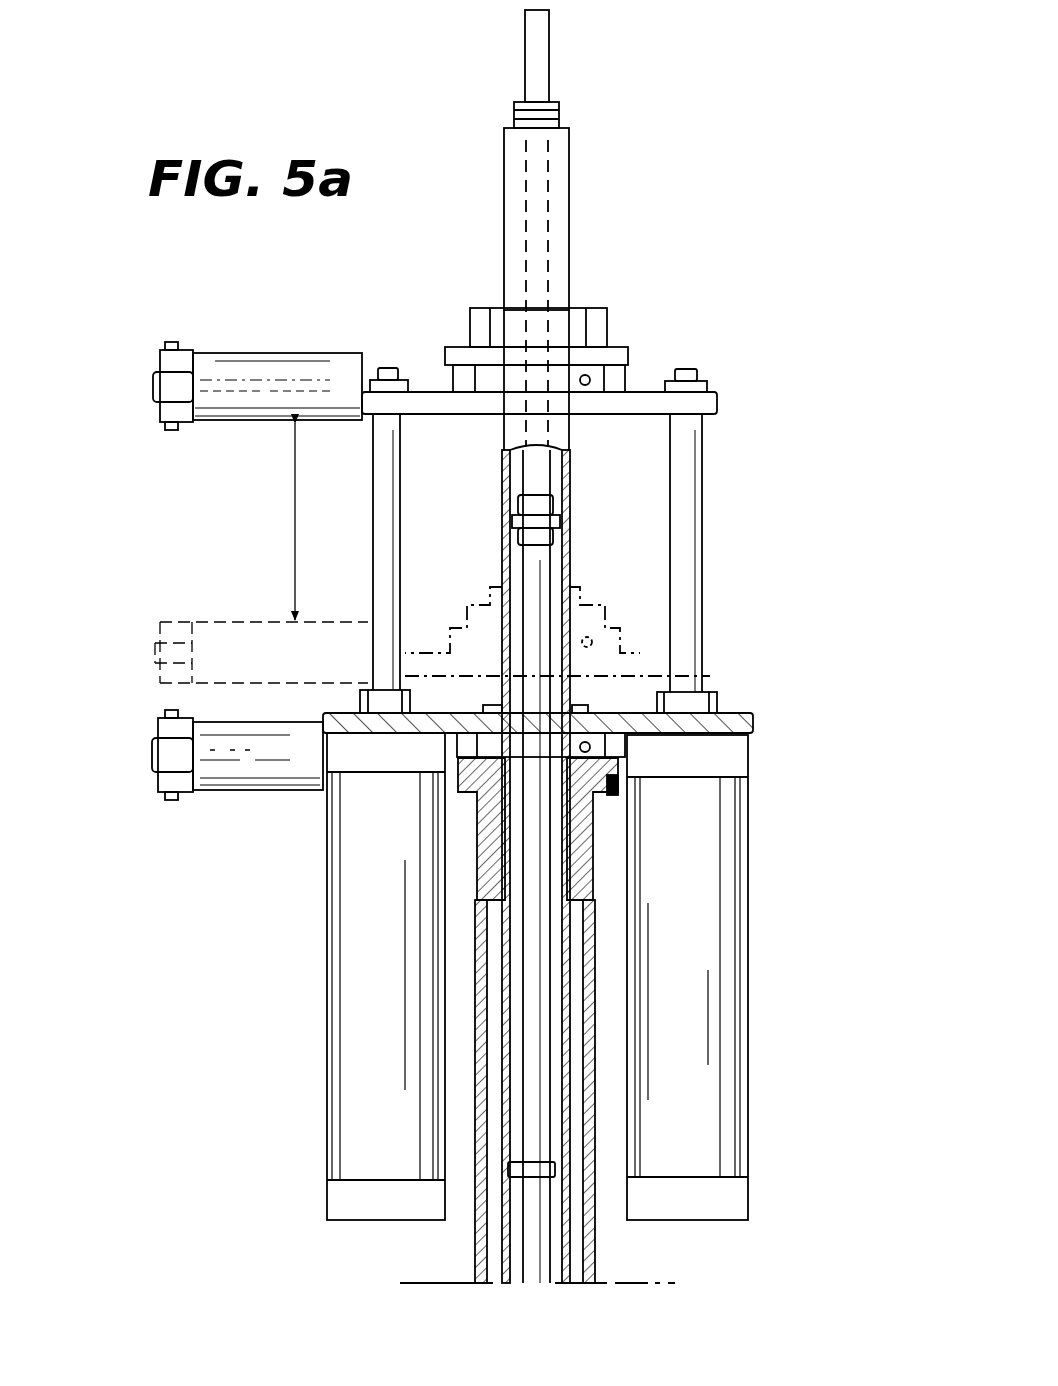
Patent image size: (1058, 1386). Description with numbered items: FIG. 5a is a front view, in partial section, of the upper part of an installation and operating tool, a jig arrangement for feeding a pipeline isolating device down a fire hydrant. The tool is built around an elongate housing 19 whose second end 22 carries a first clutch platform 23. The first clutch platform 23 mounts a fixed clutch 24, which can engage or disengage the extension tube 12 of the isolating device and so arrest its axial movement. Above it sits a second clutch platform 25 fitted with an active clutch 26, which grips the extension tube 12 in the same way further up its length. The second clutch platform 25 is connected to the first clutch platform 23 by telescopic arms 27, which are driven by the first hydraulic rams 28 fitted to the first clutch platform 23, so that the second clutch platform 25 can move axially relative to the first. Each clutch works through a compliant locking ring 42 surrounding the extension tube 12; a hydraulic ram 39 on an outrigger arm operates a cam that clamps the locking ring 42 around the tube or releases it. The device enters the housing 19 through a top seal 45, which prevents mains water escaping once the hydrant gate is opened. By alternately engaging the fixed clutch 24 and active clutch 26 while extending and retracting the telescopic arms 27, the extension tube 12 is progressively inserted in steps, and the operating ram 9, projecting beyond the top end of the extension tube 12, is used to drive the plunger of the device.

The operating ram 9 is at (548, 62).
The extension tube 12 is at (565, 232).
The elongate housing 19 is at (593, 1005).
The second end 22 is at (593, 822).
The first clutch platform 23 is at (737, 708).
The fixed clutch 24 is at (316, 743).
The second clutch platform 25 is at (720, 393).
The active clutch 26 is at (427, 372).
The telescopic arms 27 is at (377, 483).
The first hydraulic rams 28 is at (355, 978).
The hydraulic ram 39 is at (253, 370).
The compliant locking ring 42 is at (577, 372).
The top seal 45 is at (487, 845).